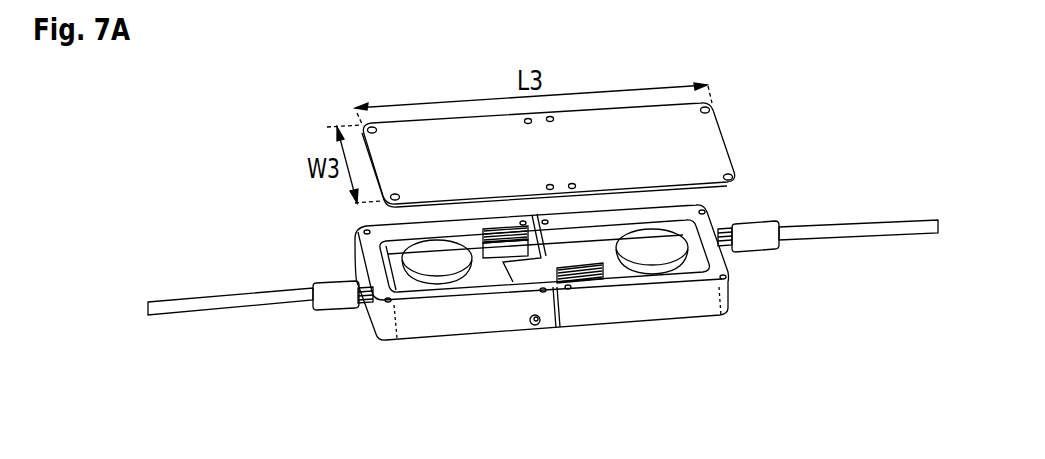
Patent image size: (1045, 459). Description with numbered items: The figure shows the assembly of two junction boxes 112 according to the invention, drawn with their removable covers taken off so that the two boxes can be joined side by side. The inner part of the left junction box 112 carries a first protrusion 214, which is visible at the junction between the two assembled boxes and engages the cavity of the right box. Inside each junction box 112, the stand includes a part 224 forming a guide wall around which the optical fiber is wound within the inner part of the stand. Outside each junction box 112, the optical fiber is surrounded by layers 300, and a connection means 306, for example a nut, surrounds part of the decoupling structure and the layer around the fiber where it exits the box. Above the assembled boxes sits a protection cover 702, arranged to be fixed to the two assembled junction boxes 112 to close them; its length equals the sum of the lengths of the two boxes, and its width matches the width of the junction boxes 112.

The junction box 112 is at (435, 322).
The first protrusion 214 is at (527, 272).
The guide wall part 224 is at (417, 268).
The layers 300 is at (207, 303).
The connection means 306 is at (325, 293).
The protection cover 702 is at (707, 140).